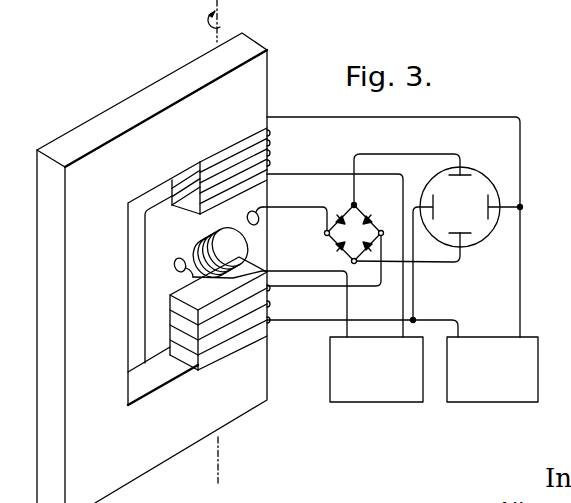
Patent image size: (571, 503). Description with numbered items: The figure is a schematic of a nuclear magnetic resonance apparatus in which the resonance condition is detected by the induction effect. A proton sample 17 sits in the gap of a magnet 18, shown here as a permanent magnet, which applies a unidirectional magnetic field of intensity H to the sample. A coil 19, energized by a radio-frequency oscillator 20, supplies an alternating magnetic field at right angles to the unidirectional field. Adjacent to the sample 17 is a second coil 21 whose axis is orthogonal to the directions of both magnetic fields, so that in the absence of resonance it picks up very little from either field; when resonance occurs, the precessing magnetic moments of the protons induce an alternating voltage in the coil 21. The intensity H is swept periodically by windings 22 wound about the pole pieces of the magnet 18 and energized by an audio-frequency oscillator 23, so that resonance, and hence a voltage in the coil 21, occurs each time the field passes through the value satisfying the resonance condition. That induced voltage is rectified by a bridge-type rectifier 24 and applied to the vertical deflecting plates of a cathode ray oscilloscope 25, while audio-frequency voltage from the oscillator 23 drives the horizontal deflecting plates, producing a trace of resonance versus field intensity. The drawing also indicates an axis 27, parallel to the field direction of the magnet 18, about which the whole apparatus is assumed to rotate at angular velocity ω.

The proton sample 17 is at (238, 247).
The magnet 18 is at (141, 466).
The coil 19 is at (197, 236).
The radio-frequency oscillator 20 is at (330, 357).
The second coil 21 is at (261, 218).
The windings 22 is at (267, 154).
The audio-frequency oscillator 23 is at (495, 402).
The bridge-type rectifier 24 is at (347, 206).
The cathode ray oscilloscope 25 is at (438, 172).
The axis 27 is at (218, 460).